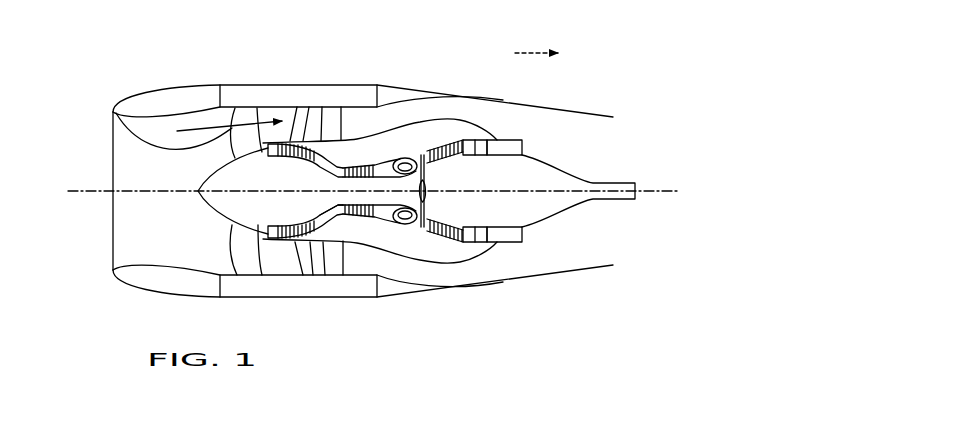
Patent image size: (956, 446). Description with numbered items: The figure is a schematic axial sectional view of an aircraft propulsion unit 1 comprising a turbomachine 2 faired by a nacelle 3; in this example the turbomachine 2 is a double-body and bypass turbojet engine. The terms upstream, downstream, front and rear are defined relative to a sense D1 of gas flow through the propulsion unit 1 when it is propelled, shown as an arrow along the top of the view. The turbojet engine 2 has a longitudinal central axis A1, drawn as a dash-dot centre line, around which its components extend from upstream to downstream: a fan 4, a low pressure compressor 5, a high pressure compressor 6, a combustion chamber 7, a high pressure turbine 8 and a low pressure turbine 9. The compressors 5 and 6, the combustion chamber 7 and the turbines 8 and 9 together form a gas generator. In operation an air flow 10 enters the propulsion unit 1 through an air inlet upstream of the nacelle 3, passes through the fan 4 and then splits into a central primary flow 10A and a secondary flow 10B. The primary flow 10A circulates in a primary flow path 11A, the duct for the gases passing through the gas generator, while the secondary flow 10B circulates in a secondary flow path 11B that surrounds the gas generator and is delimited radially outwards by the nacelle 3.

The aircraft propulsion unit 1 is at (227, 55).
The turbomachine 2 is at (532, 142).
The nacelle 3 is at (303, 95).
The fan 4 is at (237, 240).
The low pressure compressor 5 is at (285, 142).
The high pressure compressor 6 is at (363, 165).
The combustion chamber 7 is at (403, 157).
The high pressure turbine 8 is at (423, 156).
The low pressure turbine 9 is at (468, 141).
The air flow 10 is at (187, 128).
The central primary flow 10A is at (258, 149).
The secondary flow 10B is at (240, 140).
The primary flow path 11A is at (332, 220).
The secondary flow path 11B is at (403, 272).
The longitudinal central axis A1 is at (75, 188).
The sense of gas flow D1 is at (533, 50).